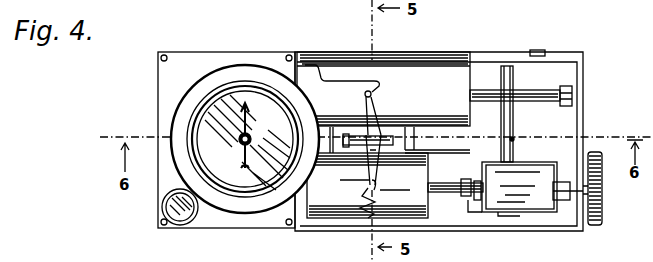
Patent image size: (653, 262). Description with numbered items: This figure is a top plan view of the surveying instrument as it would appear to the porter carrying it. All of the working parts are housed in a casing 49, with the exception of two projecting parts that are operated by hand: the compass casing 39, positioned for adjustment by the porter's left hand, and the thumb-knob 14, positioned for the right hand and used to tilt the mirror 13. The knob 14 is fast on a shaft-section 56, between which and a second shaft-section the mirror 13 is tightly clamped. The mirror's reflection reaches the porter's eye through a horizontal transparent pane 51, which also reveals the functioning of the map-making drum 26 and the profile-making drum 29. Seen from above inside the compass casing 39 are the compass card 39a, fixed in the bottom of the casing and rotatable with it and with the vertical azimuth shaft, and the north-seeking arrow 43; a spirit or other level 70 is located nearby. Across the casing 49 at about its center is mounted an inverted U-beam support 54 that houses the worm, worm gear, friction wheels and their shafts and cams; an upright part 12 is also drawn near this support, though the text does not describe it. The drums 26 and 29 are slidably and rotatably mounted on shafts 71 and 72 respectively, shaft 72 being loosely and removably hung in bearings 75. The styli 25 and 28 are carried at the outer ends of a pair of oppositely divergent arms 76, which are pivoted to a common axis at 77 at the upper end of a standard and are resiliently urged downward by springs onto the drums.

The pivot post 12 is at (513, 138).
The mirror 13 is at (533, 205).
The thumb-knob 14 is at (592, 224).
The stylus 25 is at (362, 96).
The map-making drum 26 is at (408, 78).
The stylus 28 is at (362, 192).
The profile-making drum 29 is at (410, 185).
The compass casing 39 is at (266, 70).
The compass card 39a is at (205, 150).
The north-seeking arrow 43 is at (228, 113).
The casing 49 is at (180, 65).
The horizontal transparent pane 51 is at (548, 75).
The inverted U-beam support 54 is at (420, 152).
The shaft-section 56 is at (565, 200).
The level 70 is at (172, 207).
The shaft 71 is at (492, 95).
The shaft 72 is at (455, 193).
The bearings 75 is at (472, 200).
The divergent arms 76 is at (380, 128).
The common axis 77 is at (398, 142).